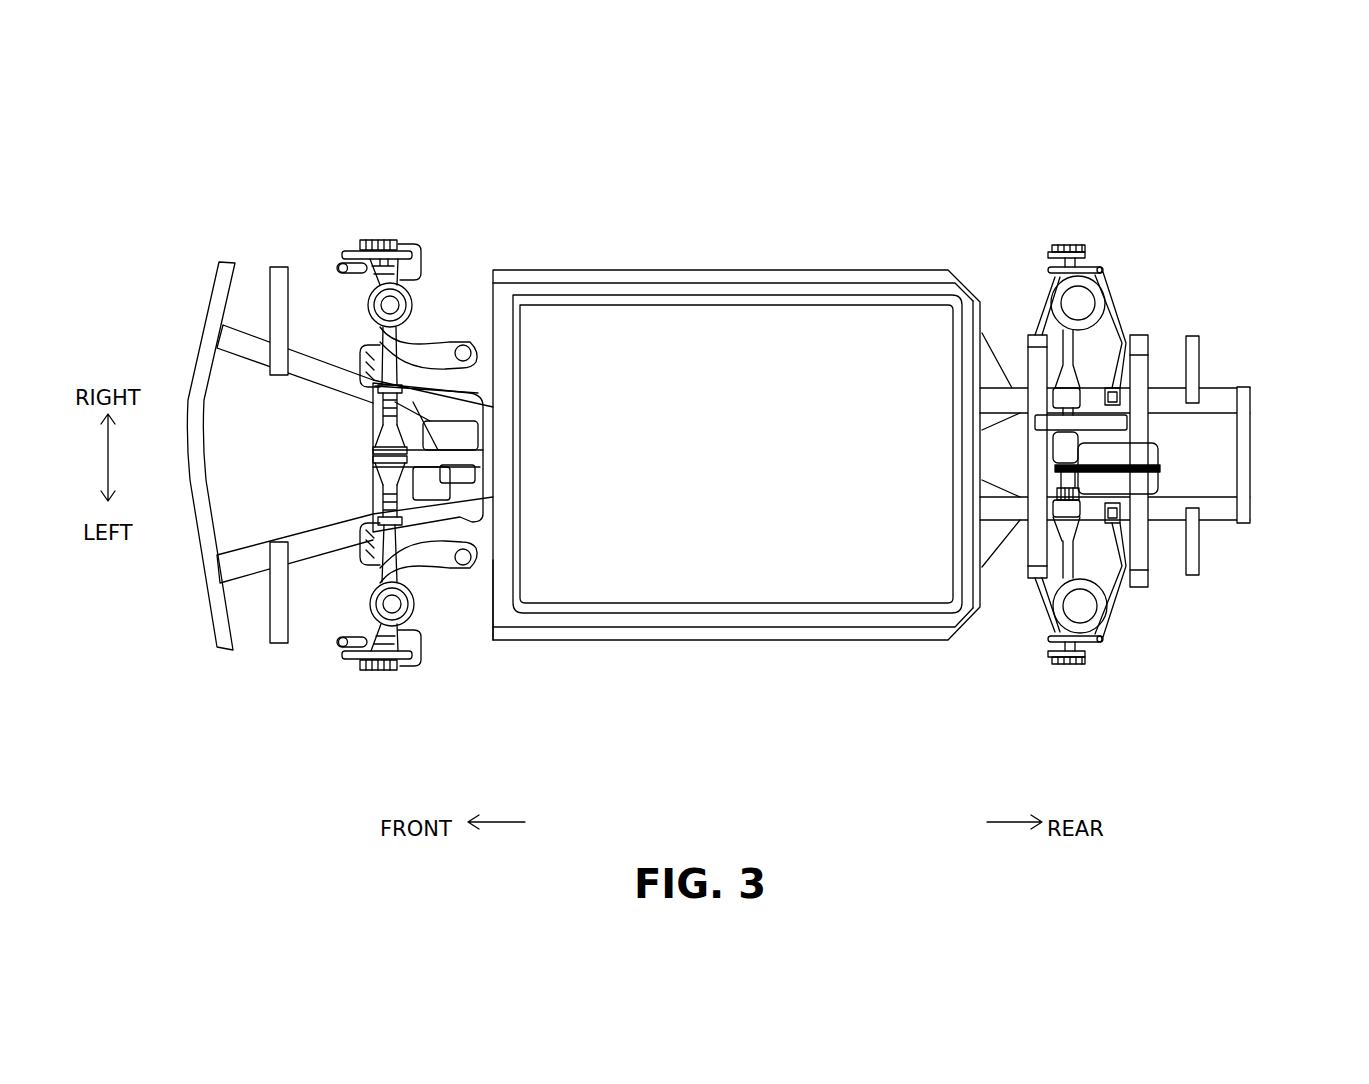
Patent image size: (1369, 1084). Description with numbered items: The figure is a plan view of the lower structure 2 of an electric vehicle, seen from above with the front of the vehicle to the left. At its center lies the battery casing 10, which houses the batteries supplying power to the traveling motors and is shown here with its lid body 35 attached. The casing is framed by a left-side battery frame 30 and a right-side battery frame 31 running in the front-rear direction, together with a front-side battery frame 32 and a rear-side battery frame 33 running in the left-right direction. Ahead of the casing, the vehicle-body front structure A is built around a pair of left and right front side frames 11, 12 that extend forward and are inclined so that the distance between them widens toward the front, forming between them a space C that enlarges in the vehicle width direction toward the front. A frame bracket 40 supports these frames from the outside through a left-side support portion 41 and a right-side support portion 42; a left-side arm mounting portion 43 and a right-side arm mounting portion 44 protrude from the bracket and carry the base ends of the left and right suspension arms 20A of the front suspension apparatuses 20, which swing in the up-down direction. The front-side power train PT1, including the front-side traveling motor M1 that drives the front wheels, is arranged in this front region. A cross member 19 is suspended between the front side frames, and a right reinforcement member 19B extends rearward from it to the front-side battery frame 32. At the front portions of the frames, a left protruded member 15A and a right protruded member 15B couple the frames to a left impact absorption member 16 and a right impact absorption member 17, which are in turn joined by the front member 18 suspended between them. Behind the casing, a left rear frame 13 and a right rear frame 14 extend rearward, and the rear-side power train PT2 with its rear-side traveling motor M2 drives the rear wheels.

The lower structure 2 is at (650, 163).
The battery casing 10 is at (668, 654).
The left front side frame 11 is at (307, 567).
The right front side frame 12 is at (307, 343).
The left rear frame 13 is at (1215, 522).
The right rear frame 14 is at (1212, 390).
The left protruded member 15A is at (268, 645).
The right protruded member 15B is at (270, 265).
The left impact absorption member 16 is at (242, 585).
The right impact absorption member 17 is at (244, 322).
The front member 18 is at (197, 360).
The cross member 19 is at (368, 416).
The right reinforcement member 19B is at (413, 428).
The front suspension apparatus 20 is at (350, 632).
The suspension arm 20A is at (429, 290).
The left-side battery frame 30 is at (755, 642).
The right-side battery frame 31 is at (730, 273).
The front-side battery frame 32 is at (488, 597).
The rear-side battery frame 33 is at (985, 600).
The lid body 35 is at (810, 325).
The frame bracket 40 is at (495, 322).
The left-side support portion 41 is at (448, 574).
The right-side support portion 42 is at (440, 372).
The left-side arm mounting portion 43 is at (518, 608).
The right-side arm mounting portion 44 is at (482, 395).
The vehicle-body front structure A is at (204, 617).
The space C is at (327, 474).
The front-side traveling motor M1 is at (462, 420).
The rear-side traveling motor M2 is at (1160, 452).
The front-side power train PT1 is at (440, 565).
The rear-side power train PT2 is at (1083, 403).